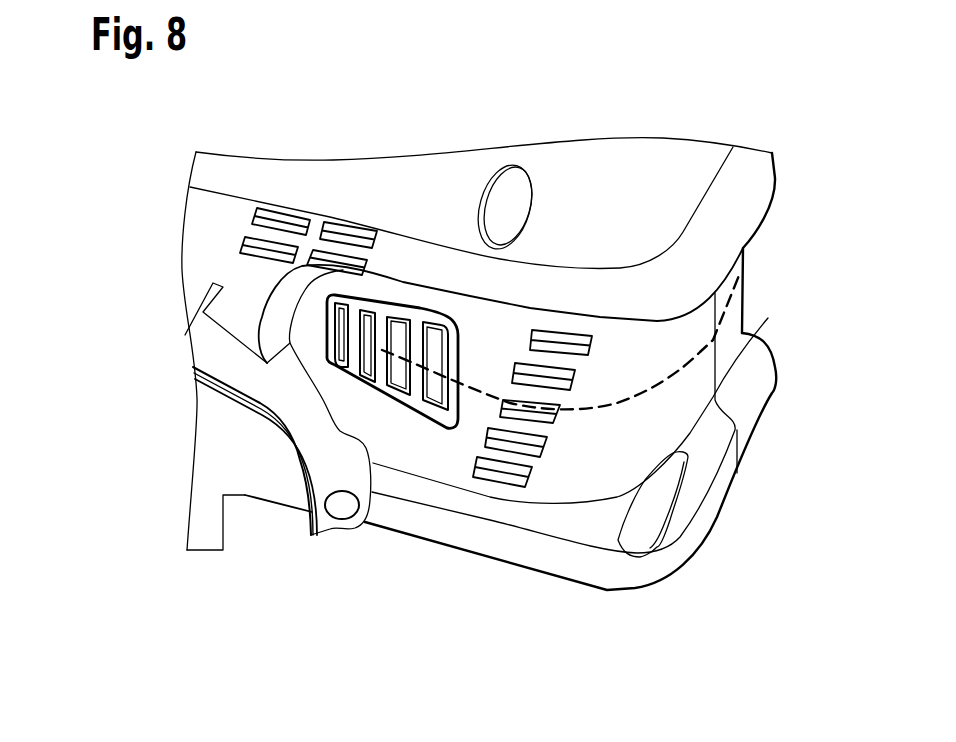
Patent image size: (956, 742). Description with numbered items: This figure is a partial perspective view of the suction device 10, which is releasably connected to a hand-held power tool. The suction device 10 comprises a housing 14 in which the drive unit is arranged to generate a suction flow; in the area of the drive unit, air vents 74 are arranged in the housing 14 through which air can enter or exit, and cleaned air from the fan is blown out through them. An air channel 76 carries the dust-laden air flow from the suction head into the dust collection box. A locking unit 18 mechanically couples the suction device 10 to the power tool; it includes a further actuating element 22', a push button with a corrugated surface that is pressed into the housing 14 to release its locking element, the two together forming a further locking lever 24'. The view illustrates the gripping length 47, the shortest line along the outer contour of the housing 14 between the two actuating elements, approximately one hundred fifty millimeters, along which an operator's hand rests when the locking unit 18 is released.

The suction device 10 is at (515, 650).
The housing 14 is at (600, 530).
The locking unit 18 is at (441, 462).
The further actuating element 22' is at (392, 444).
The further locking lever 24' is at (428, 536).
The gripping length 47 is at (670, 383).
The air vents 74 is at (352, 237).
The air channel 76 is at (260, 477).